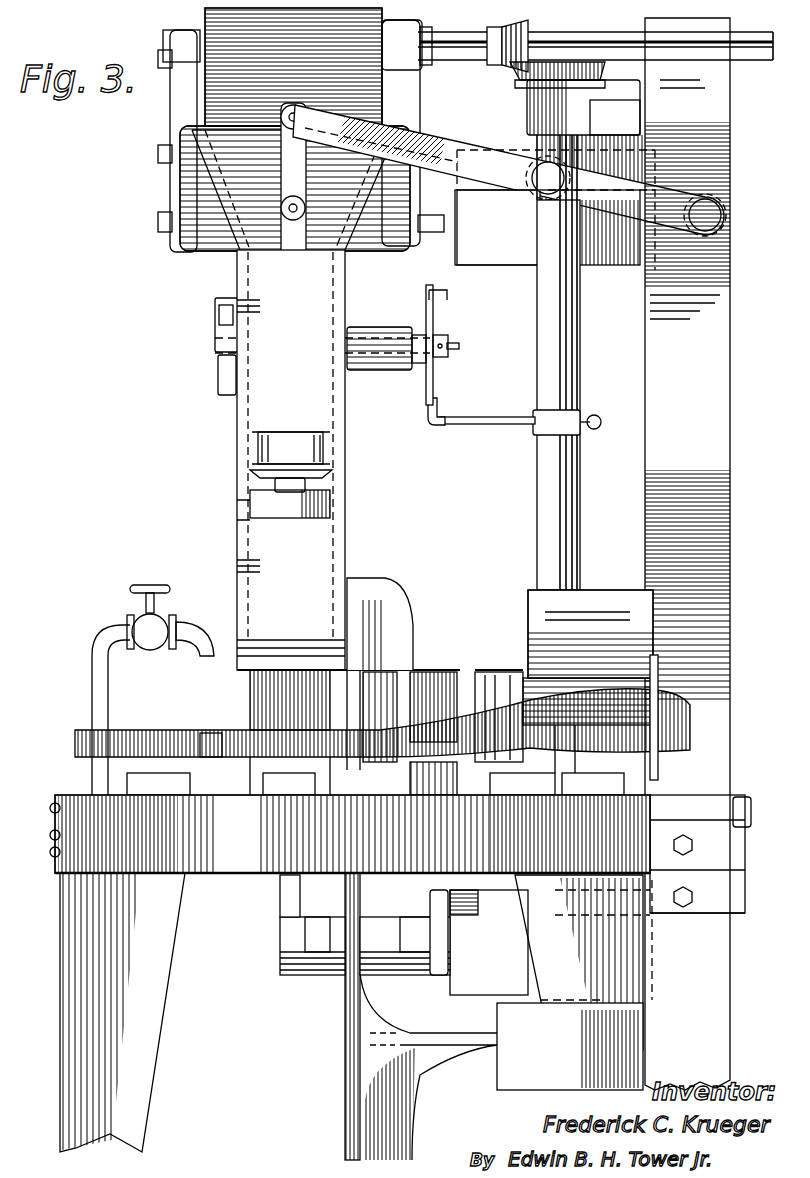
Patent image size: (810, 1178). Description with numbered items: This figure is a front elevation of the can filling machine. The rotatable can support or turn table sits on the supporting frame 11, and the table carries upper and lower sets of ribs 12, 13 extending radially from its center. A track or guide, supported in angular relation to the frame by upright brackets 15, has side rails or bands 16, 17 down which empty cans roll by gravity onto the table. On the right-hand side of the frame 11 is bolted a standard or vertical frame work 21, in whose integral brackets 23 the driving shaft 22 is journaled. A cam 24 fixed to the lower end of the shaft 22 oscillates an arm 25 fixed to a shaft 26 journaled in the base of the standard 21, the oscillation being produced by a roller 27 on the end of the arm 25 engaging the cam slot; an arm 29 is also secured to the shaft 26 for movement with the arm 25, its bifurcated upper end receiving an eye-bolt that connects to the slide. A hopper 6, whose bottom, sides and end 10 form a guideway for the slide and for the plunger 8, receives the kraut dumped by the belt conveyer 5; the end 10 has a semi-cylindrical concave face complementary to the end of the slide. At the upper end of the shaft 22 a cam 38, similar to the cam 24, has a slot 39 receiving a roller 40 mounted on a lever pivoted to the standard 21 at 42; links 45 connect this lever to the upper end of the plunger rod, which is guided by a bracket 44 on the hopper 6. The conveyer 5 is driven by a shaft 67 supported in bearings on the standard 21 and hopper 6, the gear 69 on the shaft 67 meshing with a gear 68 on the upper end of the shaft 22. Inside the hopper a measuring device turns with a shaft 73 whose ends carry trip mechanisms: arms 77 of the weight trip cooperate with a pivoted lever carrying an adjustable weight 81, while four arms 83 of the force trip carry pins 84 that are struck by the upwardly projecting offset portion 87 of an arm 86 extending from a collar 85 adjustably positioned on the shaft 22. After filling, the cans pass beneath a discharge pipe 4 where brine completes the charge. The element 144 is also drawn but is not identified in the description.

The discharge pipe 4 is at (300, 326).
The belt conveyer 5 is at (222, 20).
The hopper 6 is at (240, 257).
The plunger 8 is at (330, 506).
The end of hopper 10 is at (240, 557).
The supporting frame 11 is at (60, 829).
The upper set of ribs 12 is at (416, 797).
The lower set of ribs 13 is at (216, 745).
The upright brackets 15 is at (660, 755).
The side rail or band 16 is at (528, 664).
The side rail or band 17 is at (660, 667).
The standard or vertical frame work 21 is at (708, 446).
The driving shaft 22 is at (562, 333).
The brackets 23 is at (608, 112).
The cam 24 is at (472, 986).
The arm 25 is at (425, 922).
The shaft 26 is at (278, 943).
The roller 27 is at (470, 916).
The arm 29 is at (280, 899).
The cam 38 is at (522, 266).
The slot 39 is at (634, 172).
The roller 40 is at (545, 192).
The pivot 42 is at (722, 215).
The bracket 44 is at (450, 150).
The links 45 is at (296, 191).
The shaft 67 is at (582, 38).
The gear 68 is at (524, 74).
The gear 69 is at (530, 26).
The shaft 73 is at (369, 340).
The arms 77 is at (218, 376).
The weight 81 is at (215, 331).
The arms 83 is at (435, 374).
The pin 84 is at (442, 294).
The collar 85 is at (577, 437).
The arm 86 is at (496, 412).
The offset portion 87 is at (428, 412).
The collar 144 is at (306, 453).